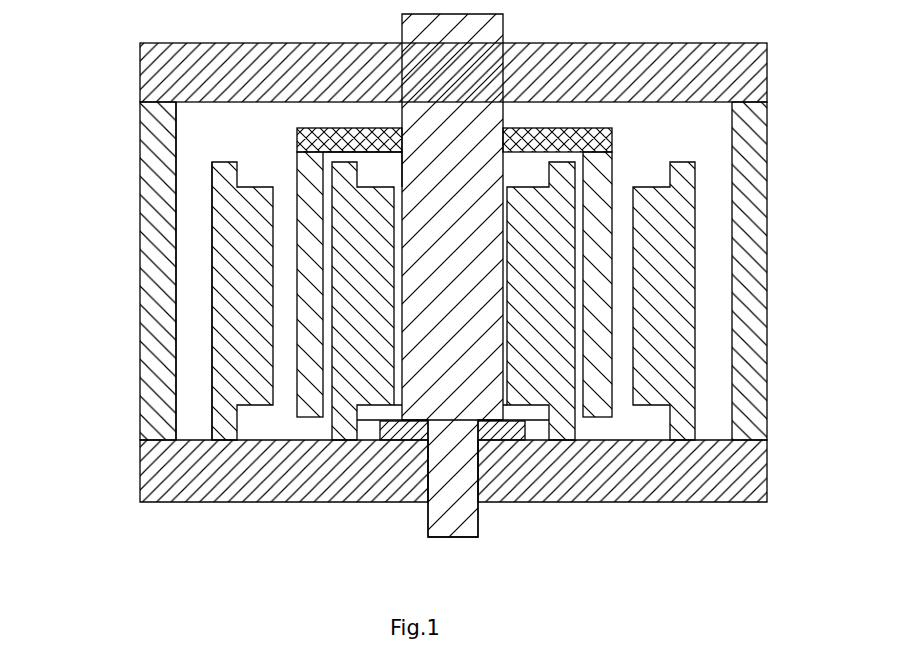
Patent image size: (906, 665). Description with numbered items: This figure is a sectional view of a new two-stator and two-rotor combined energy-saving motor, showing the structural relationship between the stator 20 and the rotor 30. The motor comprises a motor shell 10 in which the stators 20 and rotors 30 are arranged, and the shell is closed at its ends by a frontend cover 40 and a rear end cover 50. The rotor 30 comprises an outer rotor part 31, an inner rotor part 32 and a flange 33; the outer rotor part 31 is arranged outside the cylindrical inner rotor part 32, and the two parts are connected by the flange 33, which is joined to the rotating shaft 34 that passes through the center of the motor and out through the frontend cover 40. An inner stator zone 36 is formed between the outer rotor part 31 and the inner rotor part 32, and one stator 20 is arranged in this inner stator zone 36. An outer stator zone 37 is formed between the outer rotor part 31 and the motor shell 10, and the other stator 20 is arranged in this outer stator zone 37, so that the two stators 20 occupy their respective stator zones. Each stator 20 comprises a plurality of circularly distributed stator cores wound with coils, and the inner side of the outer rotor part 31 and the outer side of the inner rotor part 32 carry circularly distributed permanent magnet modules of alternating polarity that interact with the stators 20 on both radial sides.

The motor shell 10 is at (158, 275).
The stator 20 is at (243, 363).
The rotor 30 is at (473, 295).
The outer rotor part 31 is at (308, 220).
The inner rotor part 32 is at (478, 197).
The flange 33 is at (343, 135).
The rotating shaft 34 is at (450, 507).
The inner stator zone 36 is at (385, 168).
The outer stator zone 37 is at (192, 307).
The frontend cover 40 is at (567, 490).
The rear end cover 50 is at (670, 65).